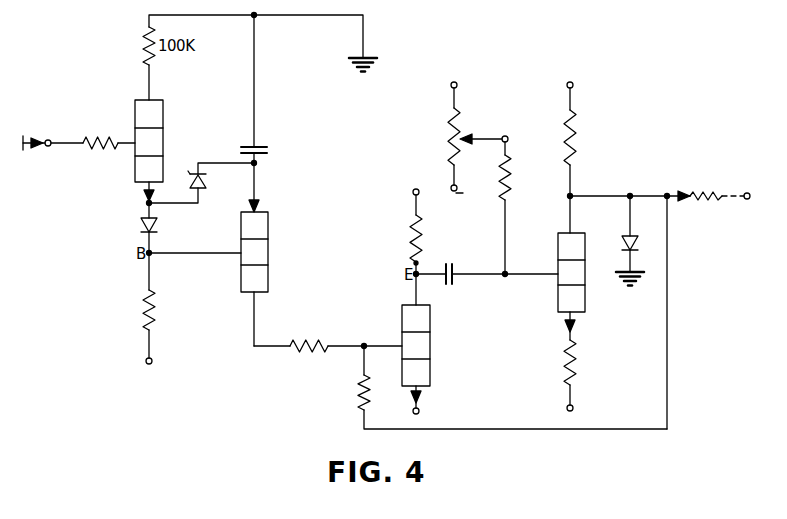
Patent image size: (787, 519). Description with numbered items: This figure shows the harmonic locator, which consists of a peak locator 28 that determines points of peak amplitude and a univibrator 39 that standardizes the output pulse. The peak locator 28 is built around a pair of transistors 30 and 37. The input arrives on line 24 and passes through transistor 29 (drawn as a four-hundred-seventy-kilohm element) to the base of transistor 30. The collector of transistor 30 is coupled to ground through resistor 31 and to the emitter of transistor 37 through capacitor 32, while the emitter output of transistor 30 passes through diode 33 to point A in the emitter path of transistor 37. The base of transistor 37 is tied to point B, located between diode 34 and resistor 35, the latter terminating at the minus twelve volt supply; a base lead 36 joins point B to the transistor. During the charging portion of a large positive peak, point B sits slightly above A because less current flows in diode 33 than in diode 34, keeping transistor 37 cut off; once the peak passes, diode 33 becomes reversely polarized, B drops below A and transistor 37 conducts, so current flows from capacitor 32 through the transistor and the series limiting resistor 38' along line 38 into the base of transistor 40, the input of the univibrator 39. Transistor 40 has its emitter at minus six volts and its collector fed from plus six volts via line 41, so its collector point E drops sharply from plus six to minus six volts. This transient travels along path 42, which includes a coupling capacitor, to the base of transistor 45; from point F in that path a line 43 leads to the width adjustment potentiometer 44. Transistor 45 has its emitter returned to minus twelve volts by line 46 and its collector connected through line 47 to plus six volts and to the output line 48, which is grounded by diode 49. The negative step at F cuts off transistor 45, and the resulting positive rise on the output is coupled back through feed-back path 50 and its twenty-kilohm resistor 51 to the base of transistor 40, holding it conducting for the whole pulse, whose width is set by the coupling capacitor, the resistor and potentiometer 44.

The line 24 is at (25, 140).
The peak locator 28 is at (80, 279).
The transistor 29 is at (108, 146).
The transistor 30 is at (164, 119).
The resistor 31 is at (200, 17).
The capacitor 32 is at (261, 152).
The diode 33 is at (206, 183).
The diode 34 is at (158, 224).
The resistor 35 is at (141, 302).
The base lead 36 is at (216, 254).
The transistor 37 is at (270, 232).
The line 38 is at (266, 365).
The series limiting resistor 38' is at (344, 353).
The univibrator 39 is at (644, 118).
The transistor 40 is at (432, 338).
The line 41 is at (412, 266).
The path 42 is at (454, 284).
The line 43 is at (507, 229).
The width adjustment potentiometer 44 is at (485, 168).
The transistor 45 is at (585, 240).
The line 46 is at (565, 363).
The line 47 is at (575, 138).
The output line 48 is at (590, 196).
The diode 49 is at (634, 243).
The feed-back path 50 is at (668, 290).
The resistor 51 is at (359, 391).